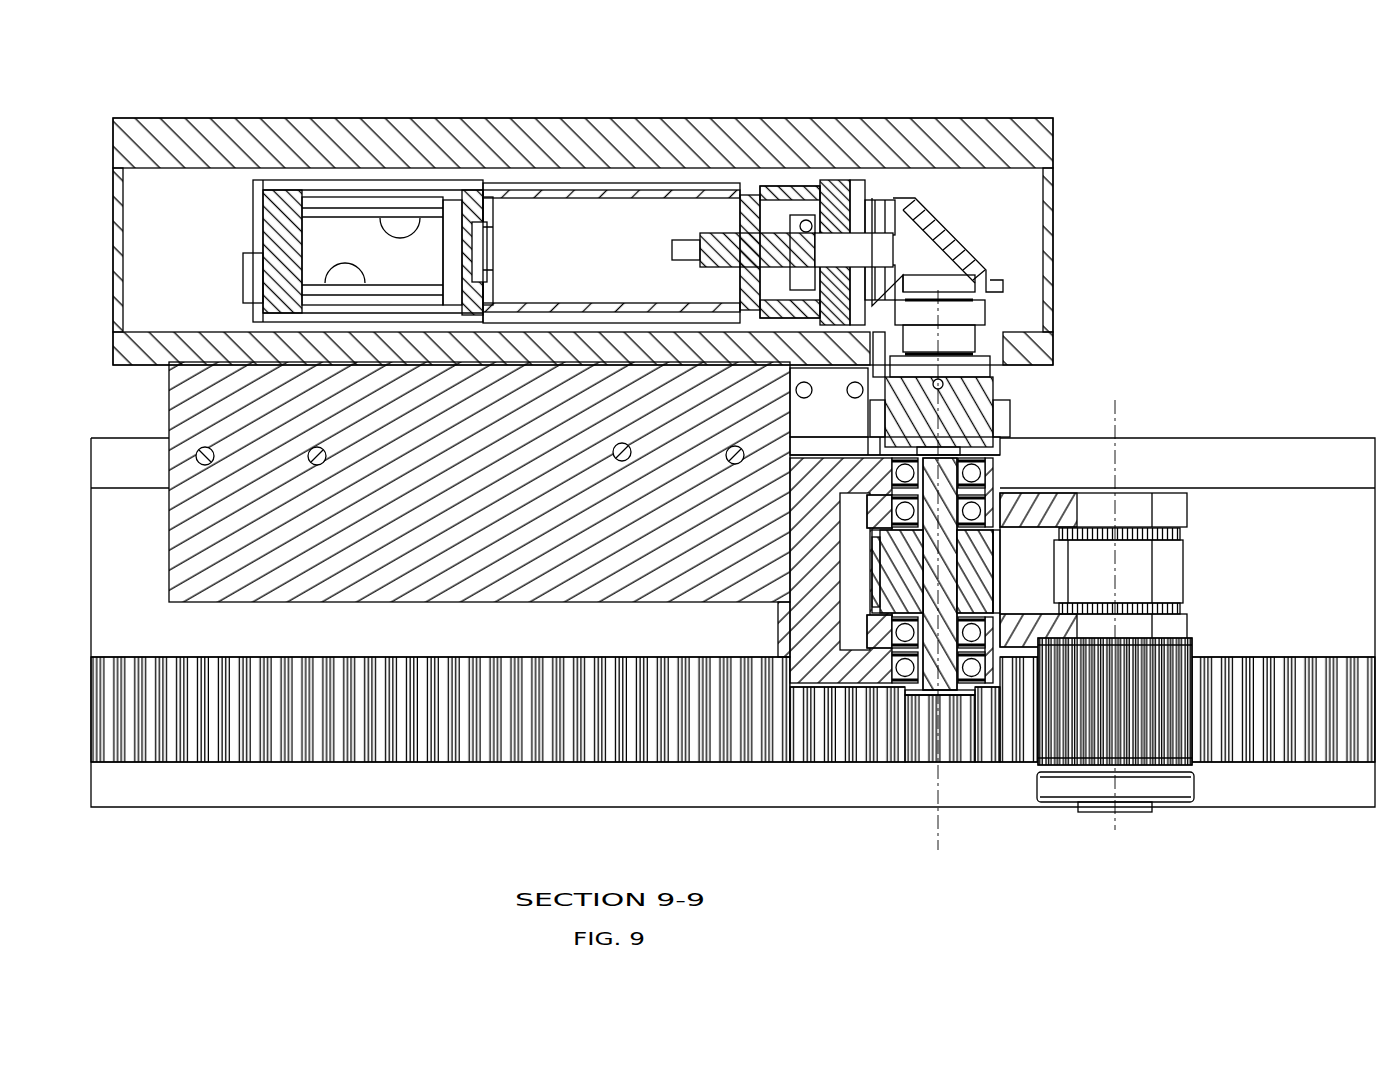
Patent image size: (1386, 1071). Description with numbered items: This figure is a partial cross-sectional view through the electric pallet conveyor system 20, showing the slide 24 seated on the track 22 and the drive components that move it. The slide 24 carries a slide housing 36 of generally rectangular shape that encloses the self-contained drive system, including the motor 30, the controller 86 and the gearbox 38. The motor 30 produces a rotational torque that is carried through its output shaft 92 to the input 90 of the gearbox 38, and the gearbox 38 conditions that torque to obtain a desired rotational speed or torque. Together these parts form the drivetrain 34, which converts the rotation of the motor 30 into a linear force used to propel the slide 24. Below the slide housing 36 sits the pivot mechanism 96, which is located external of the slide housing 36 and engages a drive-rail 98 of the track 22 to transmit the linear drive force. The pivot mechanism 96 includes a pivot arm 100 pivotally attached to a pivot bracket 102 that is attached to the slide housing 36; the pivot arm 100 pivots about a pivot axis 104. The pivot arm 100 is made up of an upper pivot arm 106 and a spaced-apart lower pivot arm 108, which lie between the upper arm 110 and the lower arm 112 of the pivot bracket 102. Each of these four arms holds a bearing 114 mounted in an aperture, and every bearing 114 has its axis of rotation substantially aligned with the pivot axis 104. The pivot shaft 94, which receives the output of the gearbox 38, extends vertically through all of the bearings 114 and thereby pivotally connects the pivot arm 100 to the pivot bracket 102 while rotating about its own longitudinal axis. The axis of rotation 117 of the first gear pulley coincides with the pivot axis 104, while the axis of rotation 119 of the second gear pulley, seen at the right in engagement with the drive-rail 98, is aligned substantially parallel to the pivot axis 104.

The electric pallet conveyor system 20 is at (1140, 77).
The track 22 is at (505, 812).
The slide 24 is at (1060, 171).
The motor 30 is at (570, 190).
The drivetrain 34 is at (1013, 296).
The slide housing 36 is at (960, 118).
The gearbox 38 is at (975, 263).
The controller 86 is at (385, 178).
The input 90 is at (837, 237).
The output shaft 92 is at (723, 232).
The pivot shaft 94 is at (958, 540).
The pivot mechanism 96 is at (783, 614).
The drive-rail 98 is at (430, 810).
The pivot arm 100 is at (1130, 495).
The pivot bracket 102 is at (790, 636).
The pivot axis 104 is at (937, 797).
The upper pivot arm 106 is at (1183, 530).
The lower pivot arm 108 is at (1183, 613).
The upper arm 110 is at (877, 450).
The lower arm 112 is at (850, 637).
The bearing 114 is at (998, 505).
The axis of rotation 117 is at (933, 810).
The axis of rotation 119 is at (1128, 812).